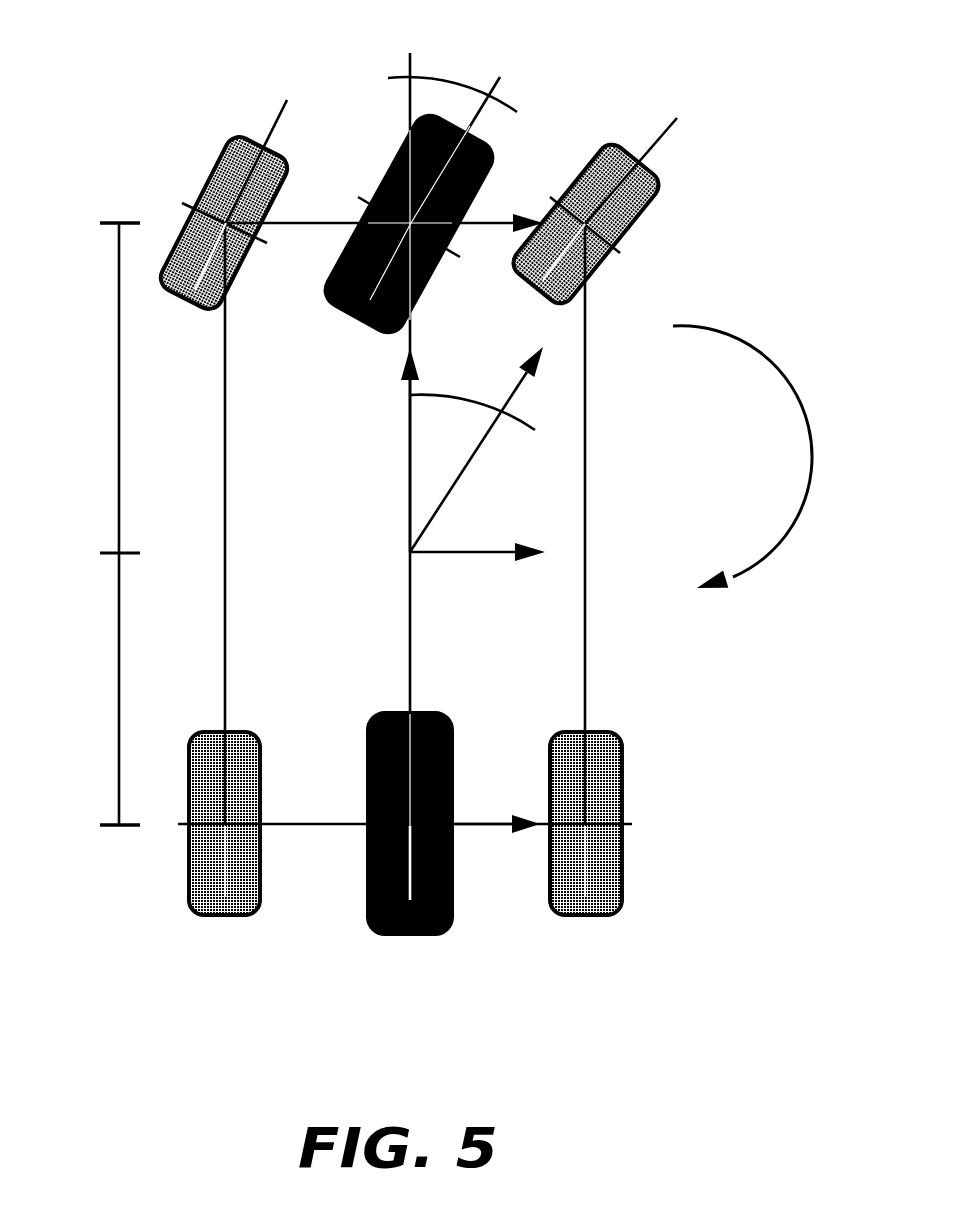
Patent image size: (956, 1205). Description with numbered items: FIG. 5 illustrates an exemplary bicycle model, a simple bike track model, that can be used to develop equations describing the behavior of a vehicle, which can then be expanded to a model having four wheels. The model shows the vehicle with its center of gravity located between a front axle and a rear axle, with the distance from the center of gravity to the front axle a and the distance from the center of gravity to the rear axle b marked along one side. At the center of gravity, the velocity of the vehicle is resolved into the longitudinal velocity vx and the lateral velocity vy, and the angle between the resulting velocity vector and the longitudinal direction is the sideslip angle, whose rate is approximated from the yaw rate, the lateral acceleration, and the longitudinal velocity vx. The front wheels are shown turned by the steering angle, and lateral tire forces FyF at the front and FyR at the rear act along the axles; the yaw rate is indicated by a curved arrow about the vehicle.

The distance from the center of gravity to the front axle a is at (103, 388).
The distance from the center of gravity to the rear axle b is at (102, 689).
The longitudinal velocity vx is at (370, 450).
The lateral velocity vy is at (477, 590).
The front lateral tire force FyF is at (384, 181).
The rear lateral tire force FyR is at (497, 856).